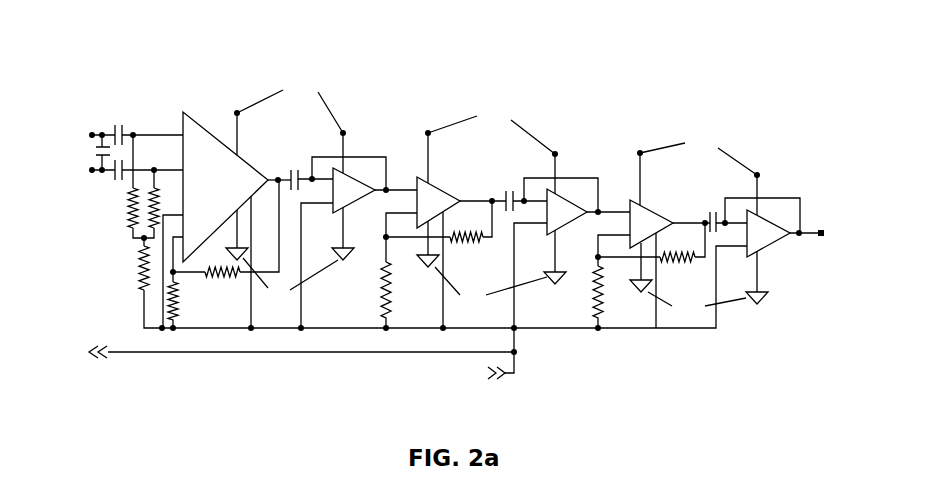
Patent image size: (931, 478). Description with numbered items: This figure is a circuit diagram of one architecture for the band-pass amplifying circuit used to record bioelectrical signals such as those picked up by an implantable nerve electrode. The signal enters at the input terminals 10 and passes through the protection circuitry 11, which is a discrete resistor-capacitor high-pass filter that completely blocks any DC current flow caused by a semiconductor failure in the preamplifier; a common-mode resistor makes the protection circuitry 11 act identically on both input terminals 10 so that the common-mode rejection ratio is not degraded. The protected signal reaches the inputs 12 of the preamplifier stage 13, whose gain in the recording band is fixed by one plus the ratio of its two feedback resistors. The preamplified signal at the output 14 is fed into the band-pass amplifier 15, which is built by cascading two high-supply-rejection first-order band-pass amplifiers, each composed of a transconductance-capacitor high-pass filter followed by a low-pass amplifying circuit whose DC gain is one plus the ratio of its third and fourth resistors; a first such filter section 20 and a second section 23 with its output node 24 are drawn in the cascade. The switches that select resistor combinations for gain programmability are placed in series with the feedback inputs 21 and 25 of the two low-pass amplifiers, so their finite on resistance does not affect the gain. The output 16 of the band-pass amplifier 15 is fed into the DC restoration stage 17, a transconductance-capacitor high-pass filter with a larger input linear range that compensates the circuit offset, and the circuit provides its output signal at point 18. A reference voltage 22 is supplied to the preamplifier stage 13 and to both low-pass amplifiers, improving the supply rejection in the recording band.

The input terminals 10 is at (72, 163).
The protection circuitry 11 is at (108, 237).
The inputs 12 is at (163, 116).
The preamplifier stage 13 is at (259, 147).
The output 14 is at (288, 156).
The band-pass amplifier 15 is at (556, 115).
The output 16 is at (707, 203).
The DC restoration stage 17 is at (778, 169).
The output point 18 is at (812, 251).
The first transconductance amplifier stage 20 is at (383, 195).
The feedback input 21 is at (389, 223).
The reference voltage 22 is at (514, 352).
The second coupling capacitor 23 is at (503, 185).
The second stage output node 24 is at (594, 218).
The feedback input 25 is at (595, 263).